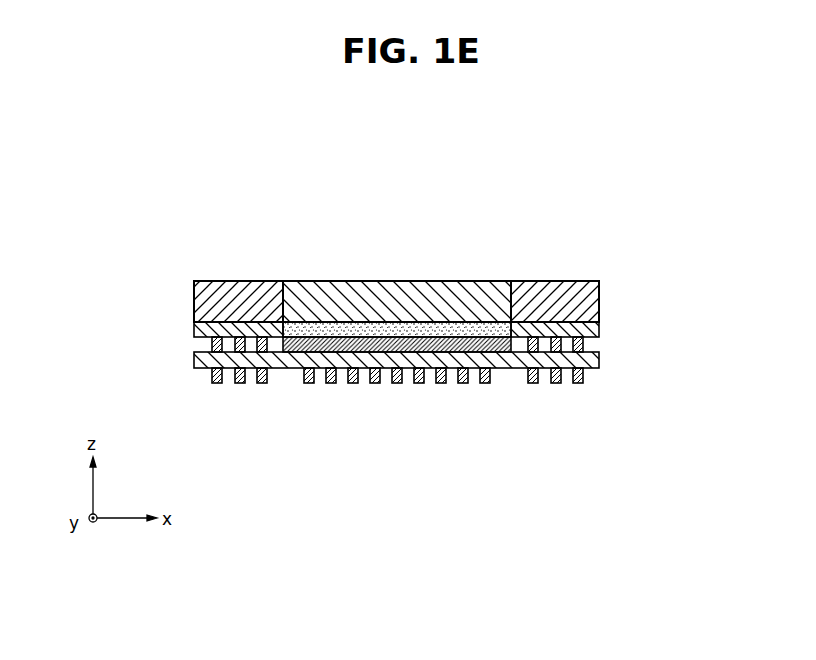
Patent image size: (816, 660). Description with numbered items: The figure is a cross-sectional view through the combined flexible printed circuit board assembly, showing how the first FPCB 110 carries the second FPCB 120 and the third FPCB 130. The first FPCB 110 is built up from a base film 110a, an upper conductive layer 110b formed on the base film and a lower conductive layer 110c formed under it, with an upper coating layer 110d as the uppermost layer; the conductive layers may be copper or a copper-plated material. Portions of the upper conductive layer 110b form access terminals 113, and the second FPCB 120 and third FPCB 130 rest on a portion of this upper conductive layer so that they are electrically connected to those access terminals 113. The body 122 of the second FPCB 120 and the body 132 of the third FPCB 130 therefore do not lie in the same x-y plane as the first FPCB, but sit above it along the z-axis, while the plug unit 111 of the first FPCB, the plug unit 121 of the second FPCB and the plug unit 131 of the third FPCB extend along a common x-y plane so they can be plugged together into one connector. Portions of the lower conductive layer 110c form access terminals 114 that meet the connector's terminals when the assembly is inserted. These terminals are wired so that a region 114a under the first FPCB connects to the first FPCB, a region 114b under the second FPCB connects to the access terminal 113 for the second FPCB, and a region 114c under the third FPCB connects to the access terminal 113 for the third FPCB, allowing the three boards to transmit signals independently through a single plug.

The first FPCB 110 is at (346, 270).
The base film 110a is at (598, 364).
The upper conductive layer 110b is at (403, 358).
The lower conductive layer 110c is at (353, 392).
The upper coating layer 110d is at (500, 322).
The plug unit 111 is at (378, 280).
The access terminals 113 is at (596, 346).
The access terminals 114 is at (592, 378).
The region under the first FPCB 114a is at (447, 392).
The region under the second FPCB 114b is at (563, 392).
The region under the third FPCB 114c is at (248, 392).
The second FPCB 120 is at (598, 270).
The plug unit 121 is at (564, 280).
The body 122 is at (598, 328).
The third FPCB 130 is at (195, 272).
The plug unit 131 is at (235, 280).
The body 132 is at (195, 327).